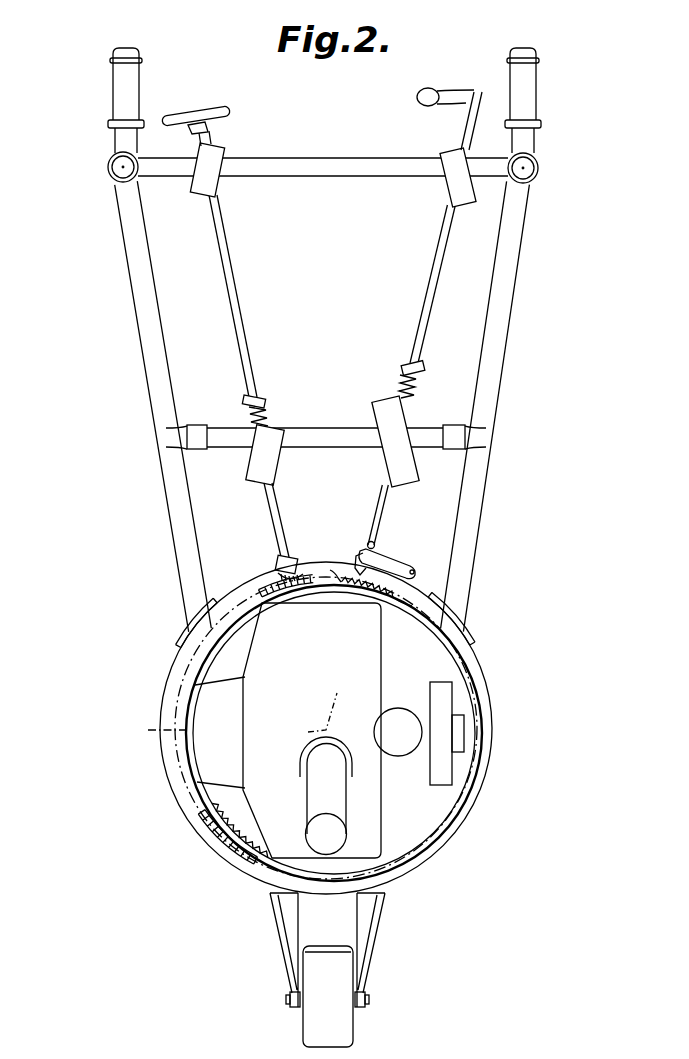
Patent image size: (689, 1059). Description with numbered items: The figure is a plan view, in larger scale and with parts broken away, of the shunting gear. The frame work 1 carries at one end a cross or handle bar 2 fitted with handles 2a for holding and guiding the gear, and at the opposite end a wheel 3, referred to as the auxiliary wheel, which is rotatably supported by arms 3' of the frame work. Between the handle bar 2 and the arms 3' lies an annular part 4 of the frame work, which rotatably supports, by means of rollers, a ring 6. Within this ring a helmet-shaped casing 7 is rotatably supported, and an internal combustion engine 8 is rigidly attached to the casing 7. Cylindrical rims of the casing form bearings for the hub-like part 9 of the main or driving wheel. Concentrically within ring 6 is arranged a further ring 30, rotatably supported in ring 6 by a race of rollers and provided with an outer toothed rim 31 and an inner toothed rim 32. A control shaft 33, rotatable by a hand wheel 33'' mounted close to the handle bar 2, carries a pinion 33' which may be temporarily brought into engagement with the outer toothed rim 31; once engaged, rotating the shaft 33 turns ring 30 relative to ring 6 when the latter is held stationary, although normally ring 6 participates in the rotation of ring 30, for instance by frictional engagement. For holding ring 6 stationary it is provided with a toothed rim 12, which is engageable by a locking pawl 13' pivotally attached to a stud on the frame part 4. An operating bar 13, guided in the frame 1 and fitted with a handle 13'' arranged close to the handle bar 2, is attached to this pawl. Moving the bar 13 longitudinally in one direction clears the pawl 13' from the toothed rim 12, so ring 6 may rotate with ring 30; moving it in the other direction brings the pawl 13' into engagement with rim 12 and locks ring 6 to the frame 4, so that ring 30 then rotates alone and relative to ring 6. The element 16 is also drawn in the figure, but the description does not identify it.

The frame work 1 is at (151, 369).
The cross or handle bar 2 is at (338, 165).
The handles 2a is at (546, 84).
The wheel 3 is at (341, 996).
The arms 3' is at (322, 950).
The annular part 4 is at (477, 803).
The ring 6 is at (400, 607).
The helmet-shaped casing 7 is at (312, 730).
The internal combustion engine 8 is at (404, 754).
The hub-like part 9 is at (137, 739).
The toothed rim 12 is at (398, 598).
The operating bar 13 is at (422, 346).
The locking pawl 13' is at (391, 558).
The handle 13'' is at (450, 111).
The cylinder 16 is at (307, 790).
The ring 30 is at (208, 820).
The outer toothed rim 31 is at (273, 580).
The inner toothed rim 32 is at (231, 810).
The control shaft 33 is at (239, 350).
The pinion 33' is at (298, 548).
The hand wheel 33'' is at (207, 115).